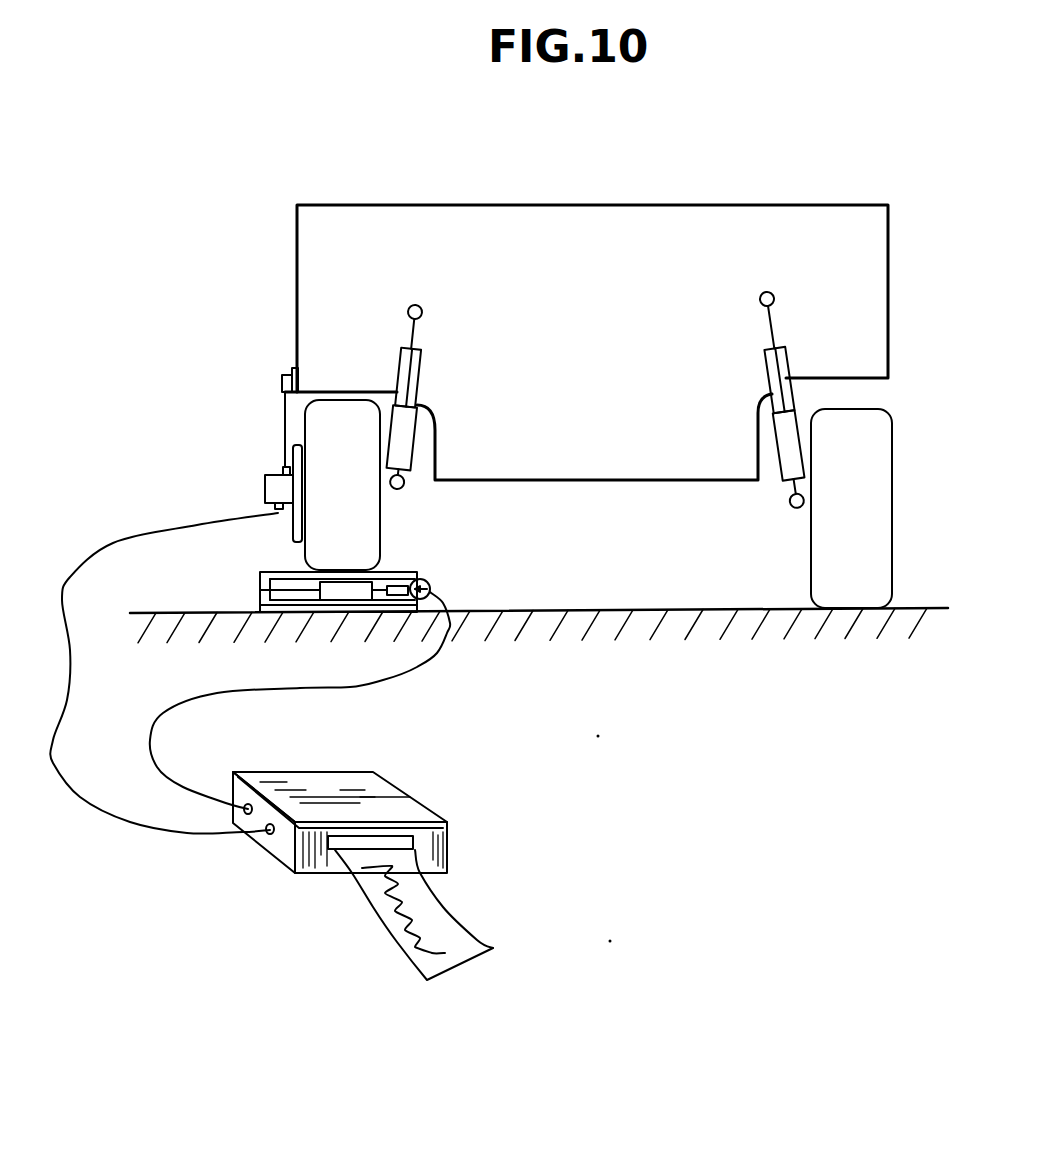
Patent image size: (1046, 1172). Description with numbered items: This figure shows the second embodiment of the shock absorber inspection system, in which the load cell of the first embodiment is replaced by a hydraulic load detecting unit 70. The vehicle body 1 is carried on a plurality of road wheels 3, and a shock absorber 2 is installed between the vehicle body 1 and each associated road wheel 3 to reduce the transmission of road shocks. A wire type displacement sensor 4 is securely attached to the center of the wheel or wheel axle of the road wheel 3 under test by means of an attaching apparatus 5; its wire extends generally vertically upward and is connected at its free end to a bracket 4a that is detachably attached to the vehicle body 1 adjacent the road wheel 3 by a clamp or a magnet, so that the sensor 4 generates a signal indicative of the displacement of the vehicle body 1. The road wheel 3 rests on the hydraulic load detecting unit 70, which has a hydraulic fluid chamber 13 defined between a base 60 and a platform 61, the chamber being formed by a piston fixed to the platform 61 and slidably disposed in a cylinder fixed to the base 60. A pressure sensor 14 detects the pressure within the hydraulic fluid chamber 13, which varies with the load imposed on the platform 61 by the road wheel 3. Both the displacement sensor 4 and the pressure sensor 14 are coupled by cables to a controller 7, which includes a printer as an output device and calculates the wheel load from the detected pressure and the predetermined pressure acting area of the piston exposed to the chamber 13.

The vehicle body 1 is at (310, 252).
The shock absorber 2 is at (423, 368).
The road wheel 3 is at (382, 512).
The displacement sensor 4 is at (265, 482).
The bracket 4a is at (290, 371).
The attaching apparatus 5 is at (293, 530).
The controller 7 is at (400, 802).
The hydraulic fluid chamber 13 is at (357, 587).
The pressure sensor 14 is at (430, 578).
The base 60 is at (260, 602).
The platform 61 is at (415, 572).
The hydraulic load detecting unit 70 is at (368, 557).